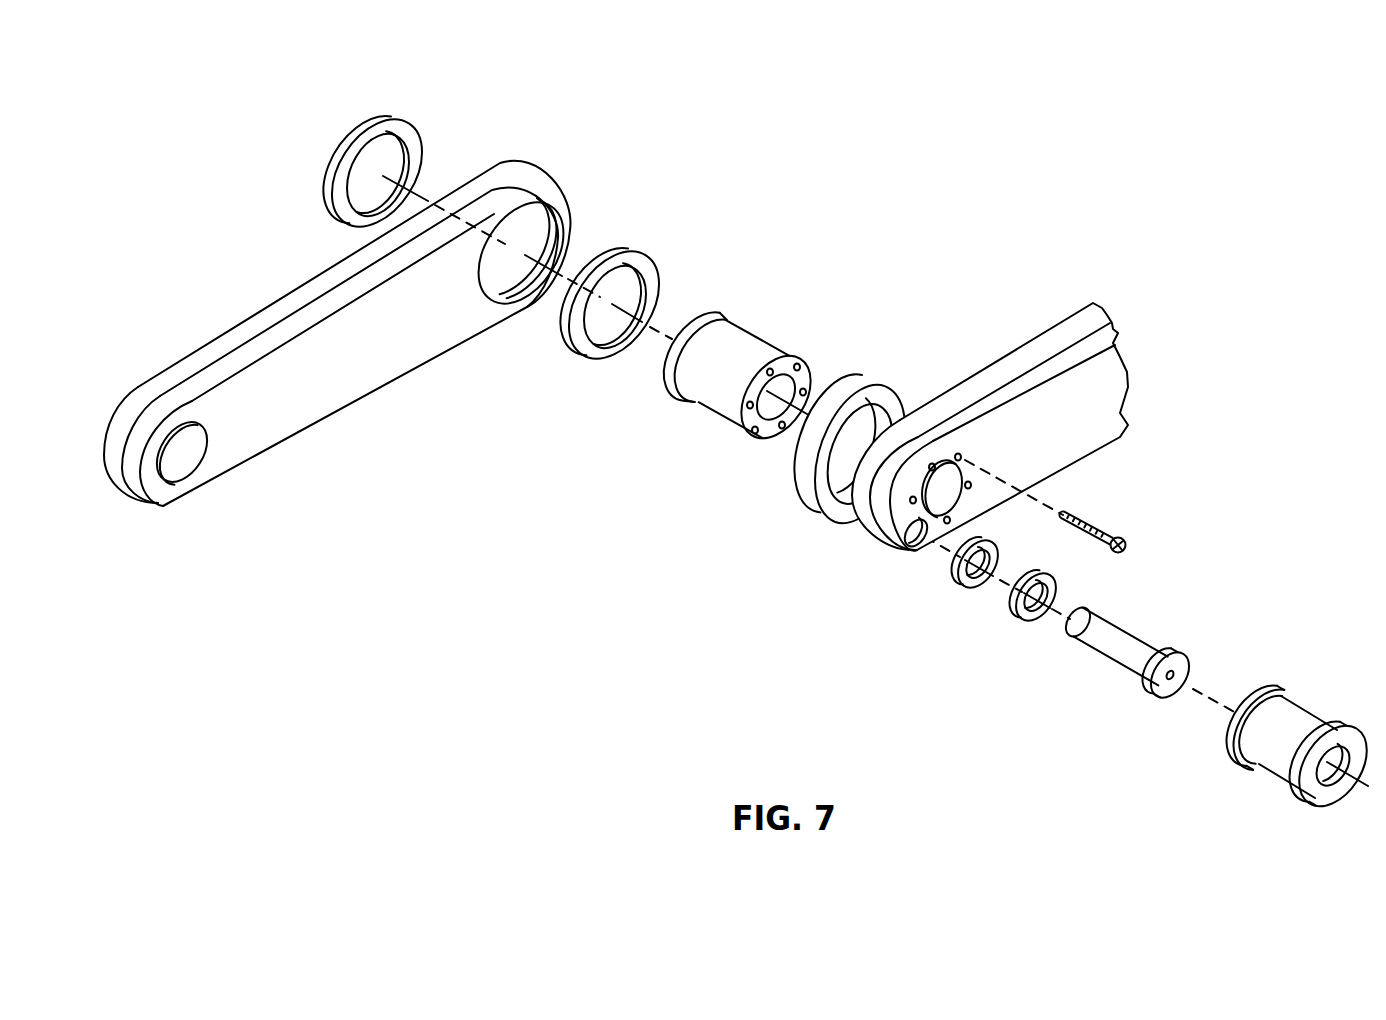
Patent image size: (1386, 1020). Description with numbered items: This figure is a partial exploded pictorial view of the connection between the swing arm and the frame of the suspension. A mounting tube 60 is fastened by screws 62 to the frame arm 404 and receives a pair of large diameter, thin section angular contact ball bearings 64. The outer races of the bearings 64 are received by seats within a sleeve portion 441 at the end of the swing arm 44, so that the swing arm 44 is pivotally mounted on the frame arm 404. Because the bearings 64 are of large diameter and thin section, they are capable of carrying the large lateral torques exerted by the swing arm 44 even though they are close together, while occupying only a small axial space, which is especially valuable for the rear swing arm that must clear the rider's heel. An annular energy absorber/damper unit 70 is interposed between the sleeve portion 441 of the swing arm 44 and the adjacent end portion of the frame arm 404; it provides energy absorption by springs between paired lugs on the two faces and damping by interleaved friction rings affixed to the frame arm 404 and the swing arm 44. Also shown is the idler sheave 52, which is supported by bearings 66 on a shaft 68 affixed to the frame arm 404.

The swing arm 44 is at (364, 403).
The sleeve portion 441 is at (543, 178).
The angular contact ball bearings 64 is at (357, 136).
The mounting tube 60 is at (763, 333).
The annular energy absorber/damper unit 70 is at (878, 372).
The frame arm 404 is at (1052, 323).
The screws 62 is at (1105, 525).
The bearings 66 is at (1018, 617).
The shaft 68 is at (1148, 645).
The idler sheave 52 is at (1320, 717).